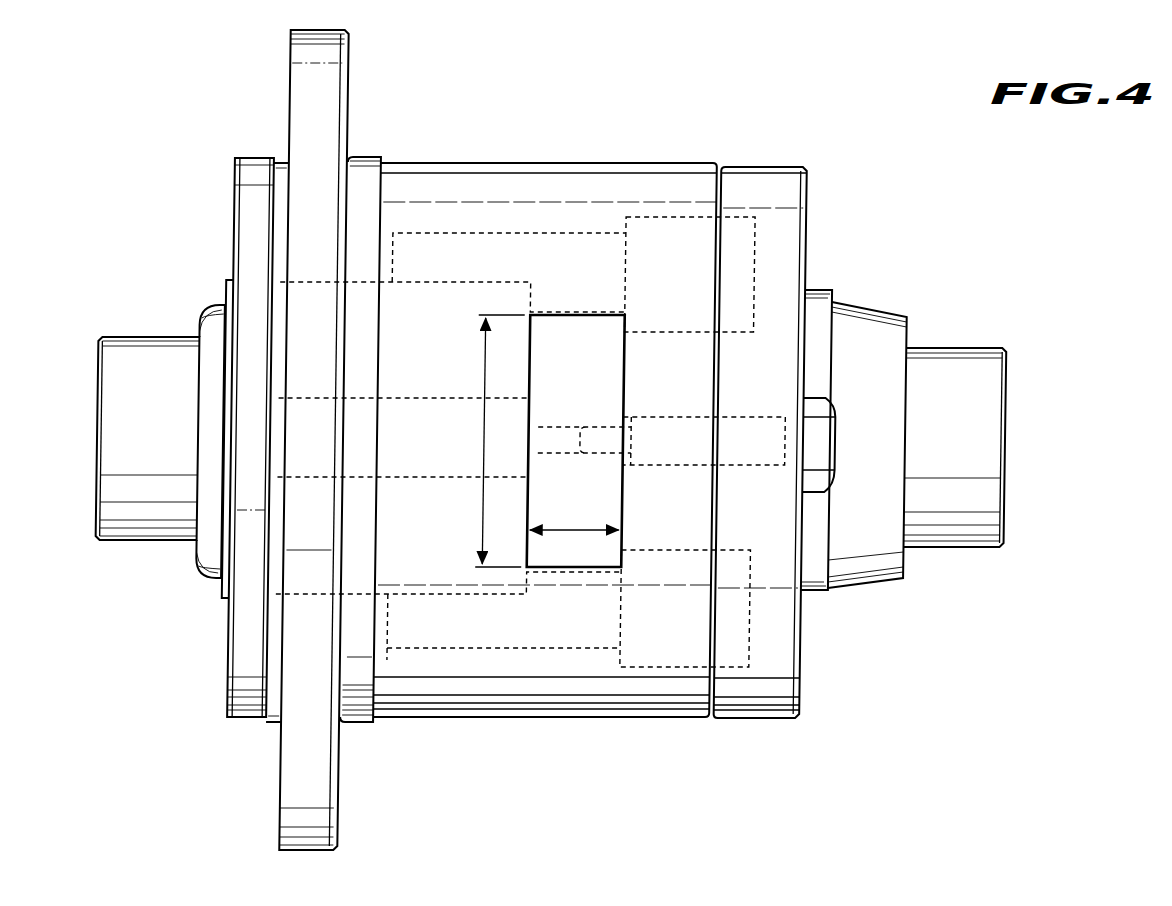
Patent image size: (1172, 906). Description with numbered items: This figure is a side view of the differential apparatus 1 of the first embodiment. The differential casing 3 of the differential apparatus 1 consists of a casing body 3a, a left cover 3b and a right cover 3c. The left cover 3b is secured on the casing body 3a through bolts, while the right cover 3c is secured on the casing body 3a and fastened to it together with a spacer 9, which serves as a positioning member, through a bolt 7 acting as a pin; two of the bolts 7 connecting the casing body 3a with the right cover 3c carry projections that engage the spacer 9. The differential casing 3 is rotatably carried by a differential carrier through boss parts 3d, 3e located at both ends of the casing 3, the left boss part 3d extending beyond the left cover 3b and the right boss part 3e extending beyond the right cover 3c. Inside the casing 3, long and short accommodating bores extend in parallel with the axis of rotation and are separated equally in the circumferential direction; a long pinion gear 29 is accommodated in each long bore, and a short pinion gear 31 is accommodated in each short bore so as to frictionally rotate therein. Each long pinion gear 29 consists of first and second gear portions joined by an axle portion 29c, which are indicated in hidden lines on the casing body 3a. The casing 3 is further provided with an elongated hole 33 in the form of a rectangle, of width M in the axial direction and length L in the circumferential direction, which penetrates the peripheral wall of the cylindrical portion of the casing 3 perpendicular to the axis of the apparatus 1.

The differential apparatus 1 is at (718, 133).
The differential casing 3 is at (357, 100).
The casing body 3a is at (531, 163).
The left cover 3b is at (229, 190).
The right cover 3c is at (804, 175).
The boss part 3d is at (156, 333).
The boss part 3e is at (916, 350).
The bolt 7 is at (840, 398).
The spacer 9 is at (582, 372).
The long pinion gear 29 is at (665, 205).
The axle portion 29c is at (589, 230).
The short pinion gear 31 is at (458, 275).
The elongated hole 33 is at (622, 390).